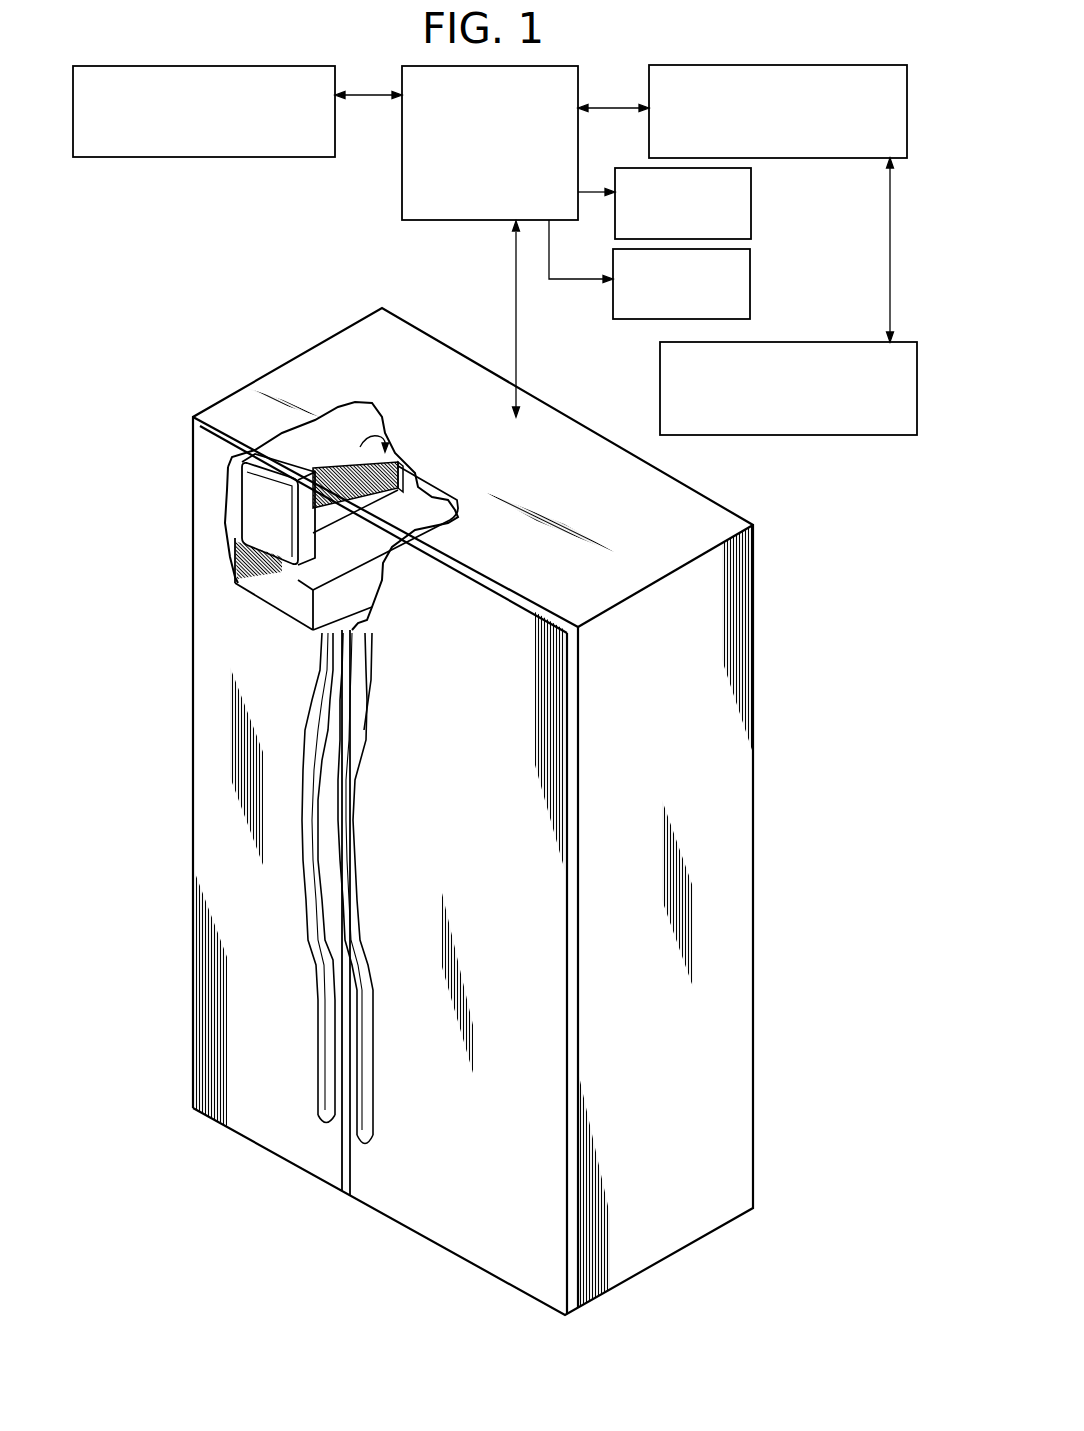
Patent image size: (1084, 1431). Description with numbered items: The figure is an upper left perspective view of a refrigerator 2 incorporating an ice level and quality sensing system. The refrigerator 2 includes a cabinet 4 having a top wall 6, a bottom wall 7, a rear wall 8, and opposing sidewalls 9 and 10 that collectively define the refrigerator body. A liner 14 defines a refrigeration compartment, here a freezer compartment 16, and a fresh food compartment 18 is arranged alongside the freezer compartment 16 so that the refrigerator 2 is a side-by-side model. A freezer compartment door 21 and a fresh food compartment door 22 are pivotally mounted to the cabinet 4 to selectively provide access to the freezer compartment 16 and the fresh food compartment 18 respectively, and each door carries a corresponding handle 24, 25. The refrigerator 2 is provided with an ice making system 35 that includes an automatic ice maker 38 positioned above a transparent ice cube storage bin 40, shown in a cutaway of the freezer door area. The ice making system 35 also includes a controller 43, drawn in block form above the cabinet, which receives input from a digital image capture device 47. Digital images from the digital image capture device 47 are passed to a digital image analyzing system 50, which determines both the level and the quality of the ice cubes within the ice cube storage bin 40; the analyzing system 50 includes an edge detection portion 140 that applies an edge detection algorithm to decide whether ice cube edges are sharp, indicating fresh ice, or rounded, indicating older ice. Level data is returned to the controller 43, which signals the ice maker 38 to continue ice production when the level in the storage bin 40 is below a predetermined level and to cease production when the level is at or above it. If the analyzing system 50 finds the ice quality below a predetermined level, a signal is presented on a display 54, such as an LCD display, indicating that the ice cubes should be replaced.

The refrigerator 2 is at (236, 332).
The cabinet 4 is at (214, 393).
The top wall 6 is at (564, 442).
The bottom wall 7 is at (676, 1254).
The rear wall 8 is at (422, 329).
The sidewall 9 is at (338, 334).
The sidewall 10 is at (638, 665).
The liner 14 is at (342, 422).
The freezer compartment 16 is at (318, 634).
The fresh food compartment 18 is at (433, 741).
The freezer compartment door 21 is at (202, 762).
The fresh food compartment door 22 is at (537, 927).
The handle 24 is at (294, 909).
The handle 25 is at (370, 878).
The ice making system 35 is at (772, 490).
The automatic ice maker 38 is at (751, 205).
The transparent ice cube storage bin 40 is at (416, 498).
The controller 43 is at (402, 177).
The digital image capture device 47 is at (223, 157).
The digital image analyzing system 50 is at (704, 65).
The display 54 is at (750, 280).
The edge detection portion 140 is at (770, 435).